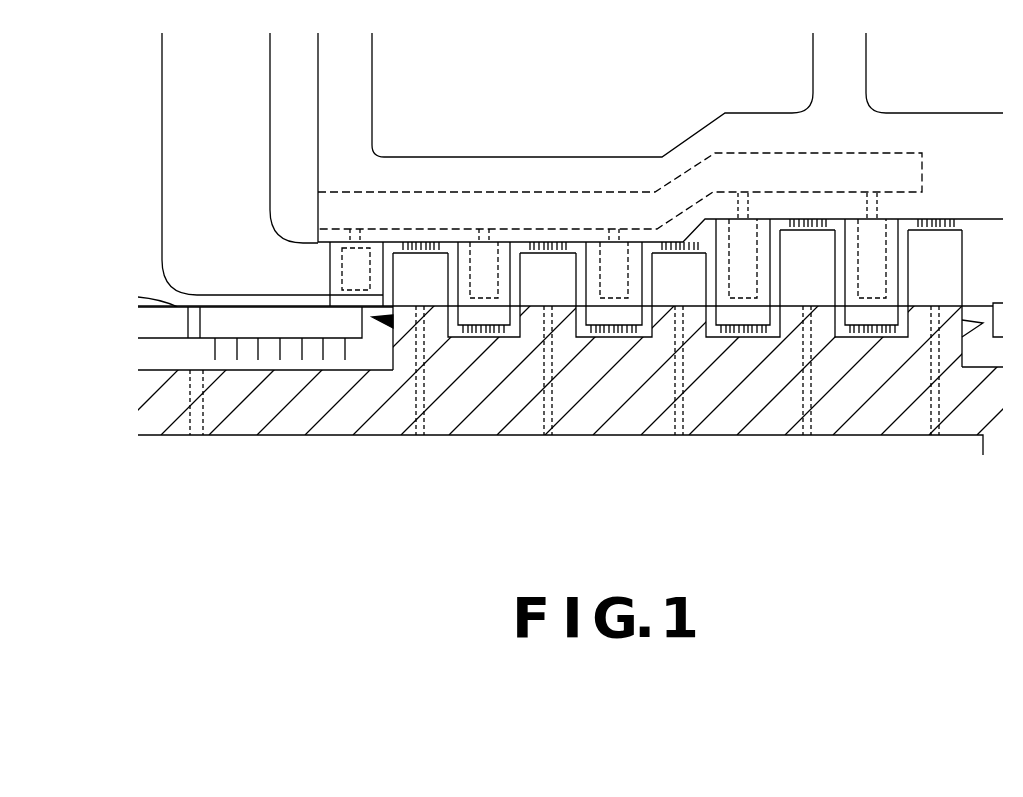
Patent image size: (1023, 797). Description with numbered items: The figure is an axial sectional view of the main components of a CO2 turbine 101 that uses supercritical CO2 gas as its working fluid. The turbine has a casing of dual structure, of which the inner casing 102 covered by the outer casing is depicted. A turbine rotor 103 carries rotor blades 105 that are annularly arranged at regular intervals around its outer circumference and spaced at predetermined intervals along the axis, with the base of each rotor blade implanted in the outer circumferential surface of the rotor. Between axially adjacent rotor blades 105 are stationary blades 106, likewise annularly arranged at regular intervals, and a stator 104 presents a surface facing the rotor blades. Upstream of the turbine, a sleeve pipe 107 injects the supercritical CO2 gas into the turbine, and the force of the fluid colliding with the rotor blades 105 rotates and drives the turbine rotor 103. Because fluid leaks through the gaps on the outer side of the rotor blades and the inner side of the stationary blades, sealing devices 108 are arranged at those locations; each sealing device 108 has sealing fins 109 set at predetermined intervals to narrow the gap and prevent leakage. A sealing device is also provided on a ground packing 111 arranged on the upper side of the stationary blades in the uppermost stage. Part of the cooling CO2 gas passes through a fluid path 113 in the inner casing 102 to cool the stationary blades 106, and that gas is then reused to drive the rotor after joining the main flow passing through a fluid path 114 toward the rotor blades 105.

The CO2 turbine 101 is at (322, 440).
The inner casing 102 is at (655, 168).
The turbine rotor 103 is at (378, 403).
The stator 104 is at (592, 265).
The rotor blades 105 is at (561, 268).
The stationary blades 106 is at (611, 306).
The sleeve pipe 107 is at (214, 138).
The sealing device 108 is at (484, 320).
The sealing fins 109 is at (267, 342).
The ground packing 111 is at (252, 317).
The fluid path 113 is at (484, 203).
The fluid path 114 is at (314, 270).